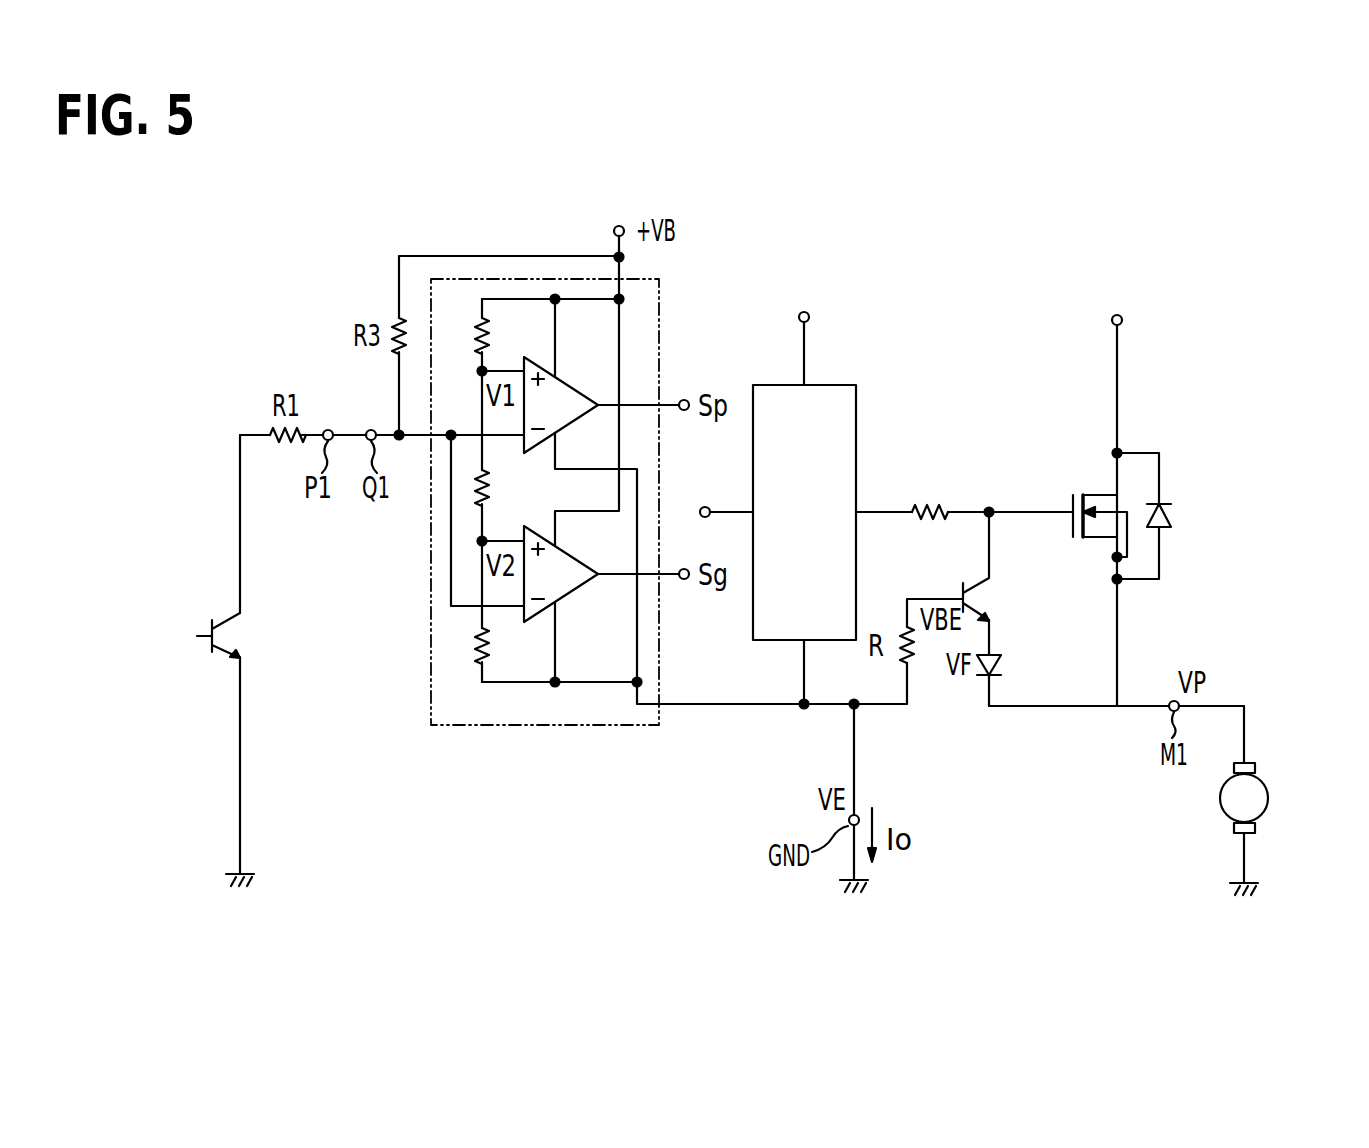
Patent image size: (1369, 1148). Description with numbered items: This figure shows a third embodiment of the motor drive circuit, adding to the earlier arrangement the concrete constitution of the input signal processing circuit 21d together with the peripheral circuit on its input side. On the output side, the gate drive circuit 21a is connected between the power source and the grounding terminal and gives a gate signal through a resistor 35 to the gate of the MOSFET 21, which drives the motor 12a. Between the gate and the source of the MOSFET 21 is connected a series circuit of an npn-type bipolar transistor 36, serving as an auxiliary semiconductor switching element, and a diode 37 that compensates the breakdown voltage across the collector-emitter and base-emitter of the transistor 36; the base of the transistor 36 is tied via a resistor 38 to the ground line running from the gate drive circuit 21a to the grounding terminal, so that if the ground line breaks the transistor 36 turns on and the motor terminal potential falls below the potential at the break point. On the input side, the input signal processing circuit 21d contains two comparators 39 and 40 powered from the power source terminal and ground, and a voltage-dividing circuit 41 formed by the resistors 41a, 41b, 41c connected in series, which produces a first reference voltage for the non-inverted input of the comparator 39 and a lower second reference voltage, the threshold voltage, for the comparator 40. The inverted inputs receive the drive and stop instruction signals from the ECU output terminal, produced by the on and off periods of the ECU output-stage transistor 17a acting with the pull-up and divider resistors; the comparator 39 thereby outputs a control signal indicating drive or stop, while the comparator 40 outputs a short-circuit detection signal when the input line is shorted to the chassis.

The motor 12a is at (1270, 800).
The transistor 17a is at (242, 640).
The MOSFET 21 is at (1090, 476).
The gate drive circuit 21a is at (857, 413).
The input signal processing circuit 21d is at (660, 322).
The resistor 35 is at (928, 501).
The npn-type bipolar transistor 36 is at (991, 599).
The diode 37 is at (1004, 665).
The resistor 38 is at (916, 655).
The comparator 39 is at (572, 380).
The comparator 40 is at (582, 564).
The voltage-dividing circuit 41 is at (492, 514).
The resistor 41a is at (490, 335).
The resistor 41b is at (490, 488).
The resistor 41c is at (490, 644).